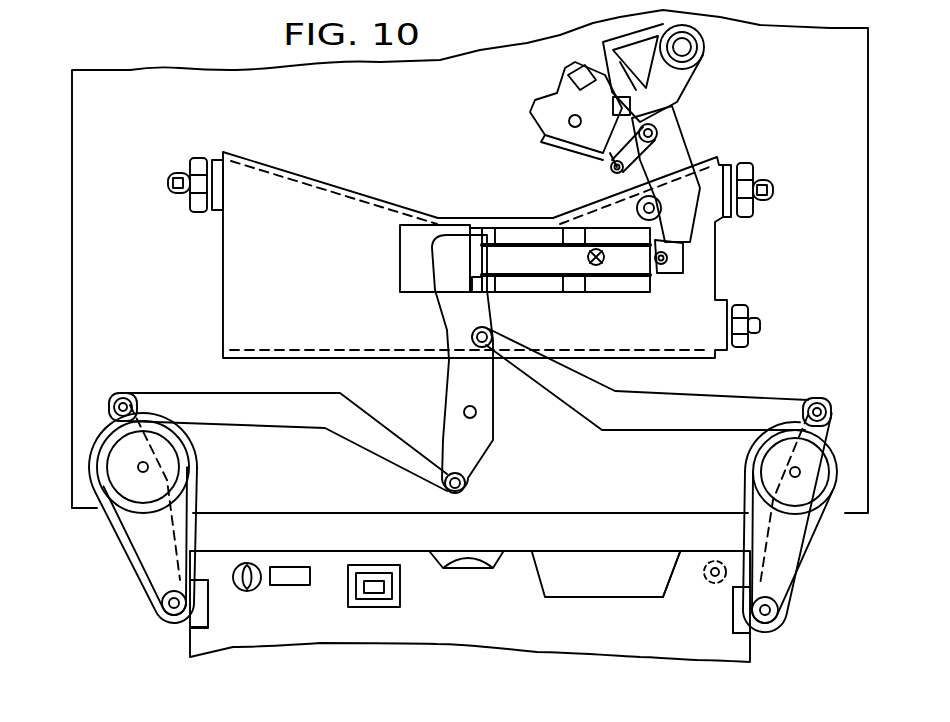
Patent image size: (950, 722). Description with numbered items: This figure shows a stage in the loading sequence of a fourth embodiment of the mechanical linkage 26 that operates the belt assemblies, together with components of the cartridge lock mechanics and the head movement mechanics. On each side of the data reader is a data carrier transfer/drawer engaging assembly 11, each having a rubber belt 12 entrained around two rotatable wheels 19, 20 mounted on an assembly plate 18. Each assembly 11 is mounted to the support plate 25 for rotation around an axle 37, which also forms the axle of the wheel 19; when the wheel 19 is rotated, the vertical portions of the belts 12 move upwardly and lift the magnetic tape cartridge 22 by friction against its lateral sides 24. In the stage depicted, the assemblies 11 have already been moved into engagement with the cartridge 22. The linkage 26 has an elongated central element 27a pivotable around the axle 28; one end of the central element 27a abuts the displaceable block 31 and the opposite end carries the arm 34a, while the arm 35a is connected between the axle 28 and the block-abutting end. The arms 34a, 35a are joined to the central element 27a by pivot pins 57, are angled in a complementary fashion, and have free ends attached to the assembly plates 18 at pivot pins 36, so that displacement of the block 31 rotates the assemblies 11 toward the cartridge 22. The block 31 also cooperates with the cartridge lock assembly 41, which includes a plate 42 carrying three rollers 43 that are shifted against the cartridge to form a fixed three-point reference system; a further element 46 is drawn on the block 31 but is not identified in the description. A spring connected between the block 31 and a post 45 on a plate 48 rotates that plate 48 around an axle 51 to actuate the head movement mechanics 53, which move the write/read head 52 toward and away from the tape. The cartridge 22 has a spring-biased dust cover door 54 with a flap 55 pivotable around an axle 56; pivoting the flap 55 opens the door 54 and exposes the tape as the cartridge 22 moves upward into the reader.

The data carrier transfer/drawer engaging assembly 11 is at (468, 546).
The rubber belt 12 is at (137, 562).
The assembly plate 18 is at (105, 523).
The rotatable wheel 19 is at (175, 452).
The rotatable wheel 20 is at (160, 616).
The magnetic tape cartridge 22 is at (385, 650).
The lateral side 24 is at (190, 655).
The support plate 25 is at (132, 76).
The mechanical linkage 26 is at (352, 459).
The central element 27a is at (478, 440).
The axle 28 is at (477, 412).
The displaceable block 31 is at (613, 283).
The arm 34a is at (340, 406).
The arm 35a is at (645, 420).
The pivot pin 36 is at (125, 400).
The axle 37 is at (143, 467).
The cartridge lock assembly 41 is at (466, 235).
The plate 42 is at (240, 244).
The roller 43 is at (198, 165).
The post 45 is at (668, 277).
The screw 46 is at (592, 252).
The plate 48 is at (672, 150).
The axle 51 is at (640, 205).
The write/read head 52 is at (555, 100).
The head movement mechanics 53 is at (714, 70).
The dust cover door 54 is at (552, 572).
The flap 55 is at (683, 553).
The axle 56 is at (715, 560).
The pivot pin 57 is at (488, 340).